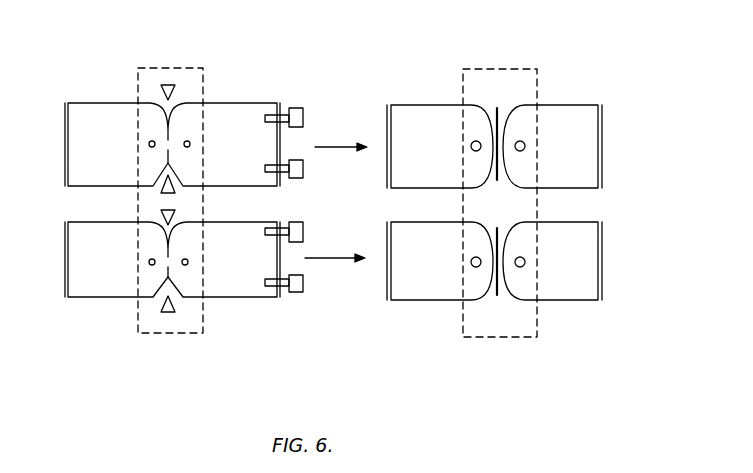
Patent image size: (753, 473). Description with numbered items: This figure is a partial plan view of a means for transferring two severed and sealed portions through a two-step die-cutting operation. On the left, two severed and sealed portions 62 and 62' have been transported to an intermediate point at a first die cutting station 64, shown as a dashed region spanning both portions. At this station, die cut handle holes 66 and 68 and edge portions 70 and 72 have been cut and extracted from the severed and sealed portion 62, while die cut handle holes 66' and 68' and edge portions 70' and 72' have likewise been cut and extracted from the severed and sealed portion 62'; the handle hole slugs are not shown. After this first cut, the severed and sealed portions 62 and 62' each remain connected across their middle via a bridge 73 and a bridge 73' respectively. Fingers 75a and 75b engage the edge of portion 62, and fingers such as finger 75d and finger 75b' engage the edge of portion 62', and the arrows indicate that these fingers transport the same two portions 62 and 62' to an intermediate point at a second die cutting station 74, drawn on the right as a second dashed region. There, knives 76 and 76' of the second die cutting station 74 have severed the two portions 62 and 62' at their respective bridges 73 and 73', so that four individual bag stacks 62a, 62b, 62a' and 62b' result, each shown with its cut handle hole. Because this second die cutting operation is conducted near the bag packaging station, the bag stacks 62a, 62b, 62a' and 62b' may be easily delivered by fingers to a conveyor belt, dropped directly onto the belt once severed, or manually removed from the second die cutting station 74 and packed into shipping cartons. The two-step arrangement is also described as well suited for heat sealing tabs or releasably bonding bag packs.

The severed and sealed portion 62 is at (159, 125).
The severed and sealed portion 62' is at (148, 277).
The individual bag stack 62a is at (431, 123).
The individual bag stack 62b is at (594, 146).
The individual bag stack 62a' is at (433, 284).
The individual bag stack 62b' is at (597, 261).
The first die cutting station 64 is at (147, 71).
The die cut handle hole 66 is at (125, 106).
The die cut handle hole 66' is at (123, 301).
The die cut handle hole 68 is at (224, 108).
The die cut handle hole 68' is at (224, 300).
The edge portion 70 is at (164, 57).
The edge portion 70' is at (206, 211).
The edge portion 72 is at (136, 195).
The edge portion 72' is at (169, 334).
The bridge 73 is at (206, 103).
The bridge 73' is at (209, 306).
The second die cutting station 74 is at (520, 66).
The finger 75a is at (297, 108).
The finger 75b is at (313, 171).
The clamp 75d is at (300, 223).
The finger 75b' is at (304, 308).
The knife 76 is at (545, 128).
The knife 76' is at (579, 241).